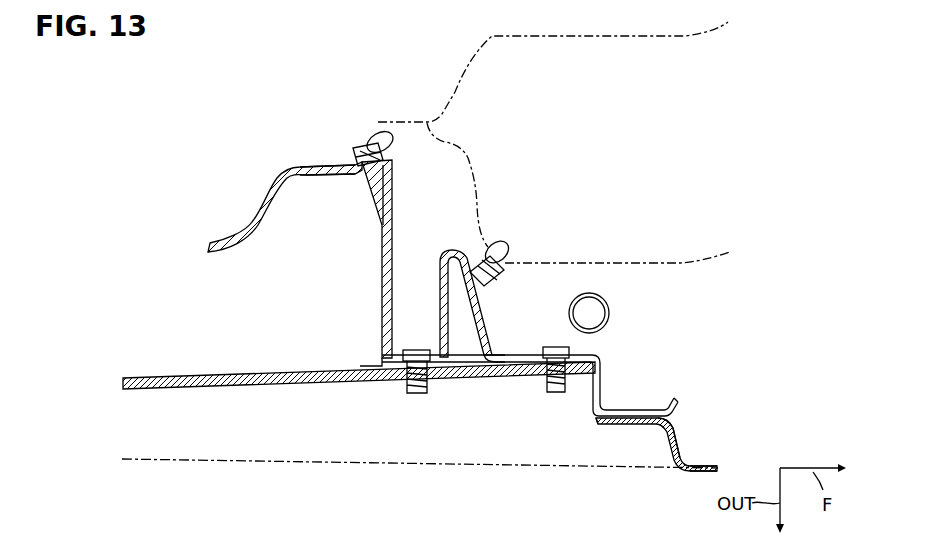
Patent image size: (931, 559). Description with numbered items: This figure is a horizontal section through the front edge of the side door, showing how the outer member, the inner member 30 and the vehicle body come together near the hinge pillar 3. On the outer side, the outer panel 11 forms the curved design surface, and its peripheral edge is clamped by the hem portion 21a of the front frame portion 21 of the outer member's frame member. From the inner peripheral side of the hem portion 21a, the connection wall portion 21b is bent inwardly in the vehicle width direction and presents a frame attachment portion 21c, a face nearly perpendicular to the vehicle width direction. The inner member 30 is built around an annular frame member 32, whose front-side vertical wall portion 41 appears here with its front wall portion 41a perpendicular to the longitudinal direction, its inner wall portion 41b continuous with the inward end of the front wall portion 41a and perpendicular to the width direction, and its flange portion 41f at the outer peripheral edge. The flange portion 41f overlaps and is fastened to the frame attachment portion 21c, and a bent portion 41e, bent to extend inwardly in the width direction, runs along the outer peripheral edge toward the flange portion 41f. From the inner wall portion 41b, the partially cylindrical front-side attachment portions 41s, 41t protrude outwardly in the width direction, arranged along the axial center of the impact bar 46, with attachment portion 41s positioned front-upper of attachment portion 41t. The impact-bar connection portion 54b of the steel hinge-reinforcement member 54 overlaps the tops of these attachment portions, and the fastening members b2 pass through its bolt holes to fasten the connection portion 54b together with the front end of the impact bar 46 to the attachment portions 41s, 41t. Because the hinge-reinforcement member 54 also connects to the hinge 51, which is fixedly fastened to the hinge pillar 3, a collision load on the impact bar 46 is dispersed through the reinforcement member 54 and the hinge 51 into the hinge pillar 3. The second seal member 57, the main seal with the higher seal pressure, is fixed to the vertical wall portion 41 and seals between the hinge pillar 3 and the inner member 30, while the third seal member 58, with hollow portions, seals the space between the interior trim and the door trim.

The hinge pillar 3 is at (682, 263).
The outer panel 11 is at (295, 470).
The front frame portion 21 is at (682, 433).
The hem portion 21a is at (693, 460).
The connection wall portion 21b is at (658, 439).
The frame attachment portion 21c is at (620, 426).
The inner member 30 is at (490, 134).
The frame member 32 is at (324, 148).
The front-side vertical wall portion 41 is at (260, 212).
The front wall portion 41a is at (598, 395).
The inner wall portion 41b is at (303, 170).
The bent portion 41e is at (673, 408).
The flange portion 41f is at (645, 410).
The front-side attachment portion 41s is at (493, 330).
The front-side attachment portion 41t is at (393, 313).
The impact bar 46 is at (207, 374).
The hinge 51 is at (609, 313).
The hinge-reinforcement member 54 is at (317, 347).
The impact-bar connection portion 54b is at (377, 363).
The second seal member 57 is at (507, 245).
The third seal member 58 is at (375, 138).
The fastening member b2 is at (408, 395).